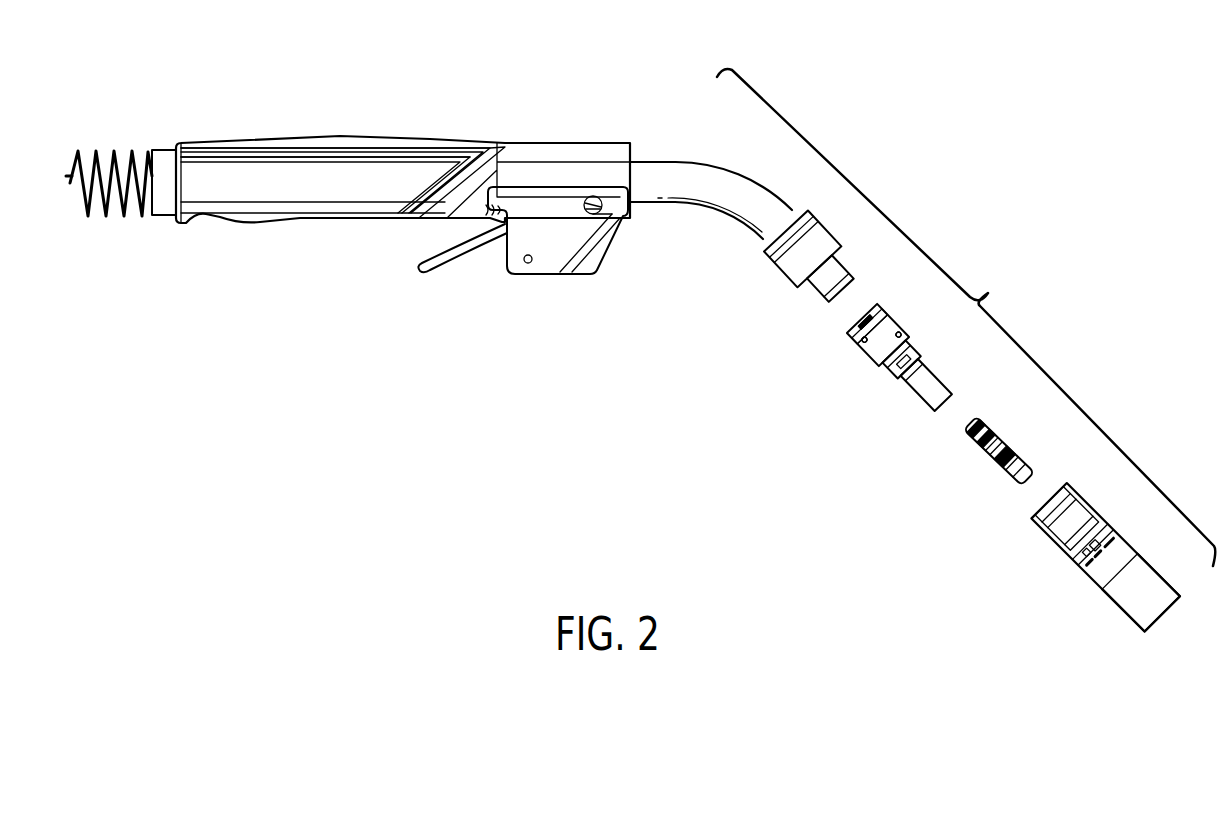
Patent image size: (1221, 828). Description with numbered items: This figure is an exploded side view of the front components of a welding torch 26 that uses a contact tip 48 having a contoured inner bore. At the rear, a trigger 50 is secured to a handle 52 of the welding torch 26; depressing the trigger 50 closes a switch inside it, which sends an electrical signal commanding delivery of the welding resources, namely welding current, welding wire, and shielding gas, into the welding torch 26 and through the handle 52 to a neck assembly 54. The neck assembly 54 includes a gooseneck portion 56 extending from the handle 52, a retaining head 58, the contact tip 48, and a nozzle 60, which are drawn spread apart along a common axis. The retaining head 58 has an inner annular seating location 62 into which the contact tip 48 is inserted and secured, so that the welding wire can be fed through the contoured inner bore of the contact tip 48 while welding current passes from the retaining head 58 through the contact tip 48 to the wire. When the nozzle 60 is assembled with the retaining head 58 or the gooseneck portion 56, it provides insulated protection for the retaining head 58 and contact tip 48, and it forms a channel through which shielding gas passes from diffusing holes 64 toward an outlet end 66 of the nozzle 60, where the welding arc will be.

The welding torch 26 is at (1043, 96).
The contact tip 48 is at (990, 462).
The trigger 50 is at (440, 270).
The handle 52 is at (226, 173).
The neck assembly 54 is at (966, 317).
The gooseneck portion 56 is at (730, 210).
The retaining head 58 is at (899, 390).
The nozzle 60 is at (1107, 592).
The inner annular seating location 62 is at (953, 415).
The diffusing holes 64 is at (873, 350).
The outlet end 66 is at (1166, 628).